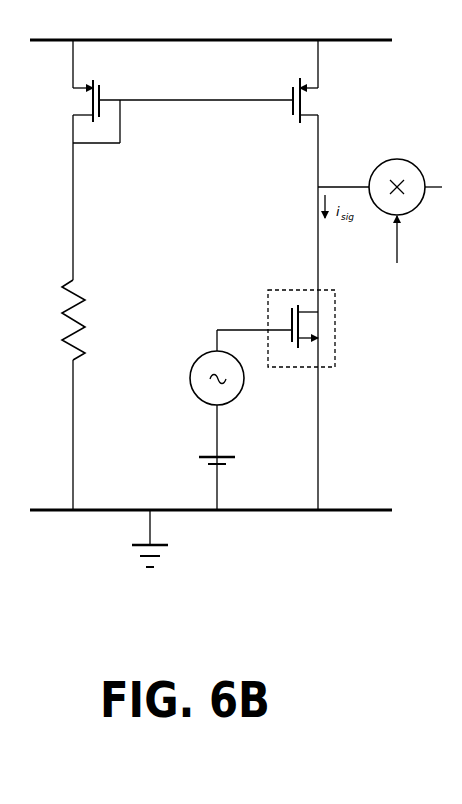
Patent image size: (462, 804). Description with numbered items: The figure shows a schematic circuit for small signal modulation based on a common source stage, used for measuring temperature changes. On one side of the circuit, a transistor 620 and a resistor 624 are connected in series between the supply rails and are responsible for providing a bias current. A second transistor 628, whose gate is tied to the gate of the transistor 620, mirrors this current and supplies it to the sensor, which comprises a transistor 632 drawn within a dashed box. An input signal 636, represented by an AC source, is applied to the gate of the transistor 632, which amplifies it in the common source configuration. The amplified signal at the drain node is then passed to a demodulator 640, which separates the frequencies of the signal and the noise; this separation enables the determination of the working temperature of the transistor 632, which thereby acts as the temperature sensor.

The transistor 620 is at (100, 88).
The resistor 624 is at (112, 300).
The transistor 628 is at (292, 92).
The transistor 632 is at (290, 317).
The input signal 636 is at (216, 331).
The demodulator 640 is at (394, 160).